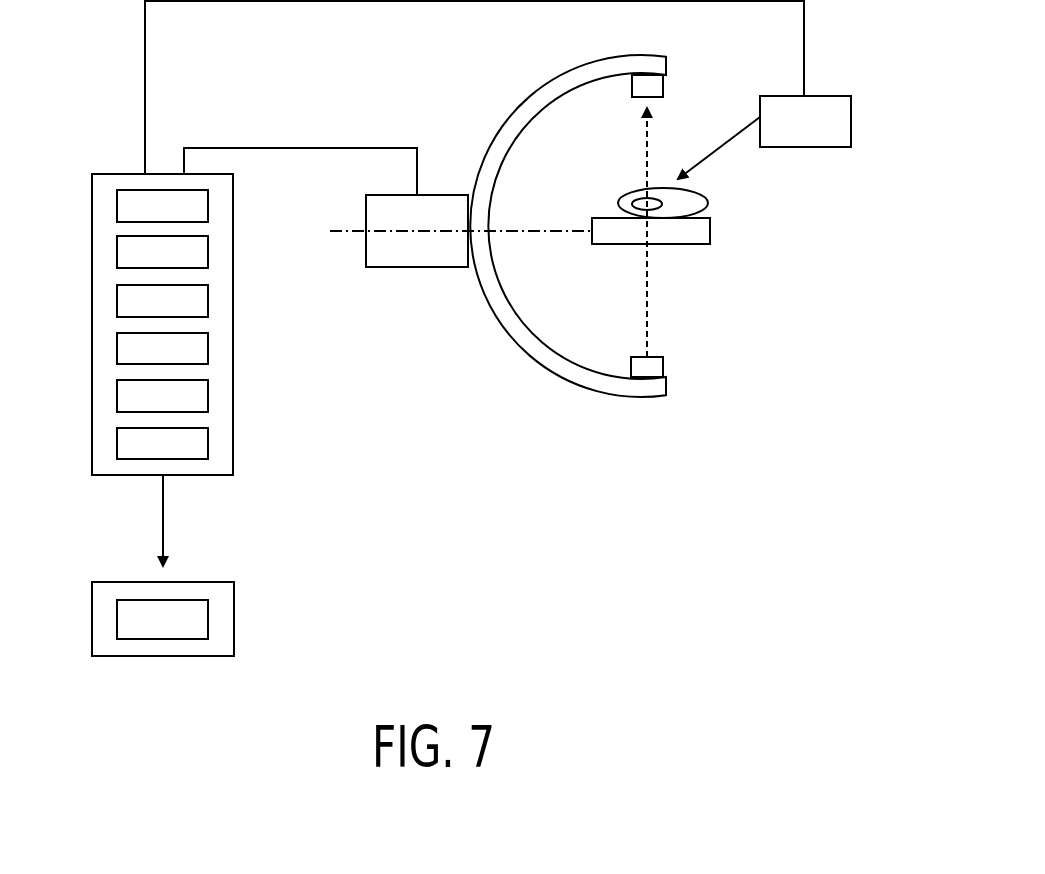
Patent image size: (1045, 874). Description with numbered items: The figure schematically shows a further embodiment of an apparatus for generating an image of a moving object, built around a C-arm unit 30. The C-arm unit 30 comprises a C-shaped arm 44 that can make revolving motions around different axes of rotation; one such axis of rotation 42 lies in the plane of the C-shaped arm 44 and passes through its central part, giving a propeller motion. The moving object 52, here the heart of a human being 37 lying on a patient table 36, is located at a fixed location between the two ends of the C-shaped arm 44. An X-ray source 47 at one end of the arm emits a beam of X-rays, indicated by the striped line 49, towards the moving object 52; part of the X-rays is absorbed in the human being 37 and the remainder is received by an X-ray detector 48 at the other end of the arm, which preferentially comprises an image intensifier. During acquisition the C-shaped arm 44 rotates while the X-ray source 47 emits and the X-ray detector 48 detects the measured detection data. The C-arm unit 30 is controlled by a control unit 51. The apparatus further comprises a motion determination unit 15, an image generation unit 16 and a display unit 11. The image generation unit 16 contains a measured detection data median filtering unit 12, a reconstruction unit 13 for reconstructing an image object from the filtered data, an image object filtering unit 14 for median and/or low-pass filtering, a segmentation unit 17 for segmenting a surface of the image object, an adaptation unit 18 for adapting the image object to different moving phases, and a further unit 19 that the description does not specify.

The display unit 11 is at (117, 617).
The measured detection data median filtering unit 12 is at (117, 208).
The reconstruction unit 13 is at (117, 252).
The image object filtering unit 14 is at (117, 300).
The motion determination unit 15 is at (833, 96).
The image generation unit 16 is at (235, 349).
The segmentation unit 17 is at (117, 348).
The adaptation unit 18 is at (117, 395).
The output unit 19 is at (117, 443).
The C-arm unit 30 is at (614, 290).
The patient table 36 is at (712, 230).
The human being 37 is at (708, 200).
The axis of rotation 42 is at (341, 232).
The C-shaped arm 44 is at (508, 333).
The X-ray source 47 is at (665, 368).
The X-ray detector 48 is at (665, 85).
The striped line 49 is at (649, 284).
The control unit 51 is at (407, 268).
The moving object 52 is at (637, 198).